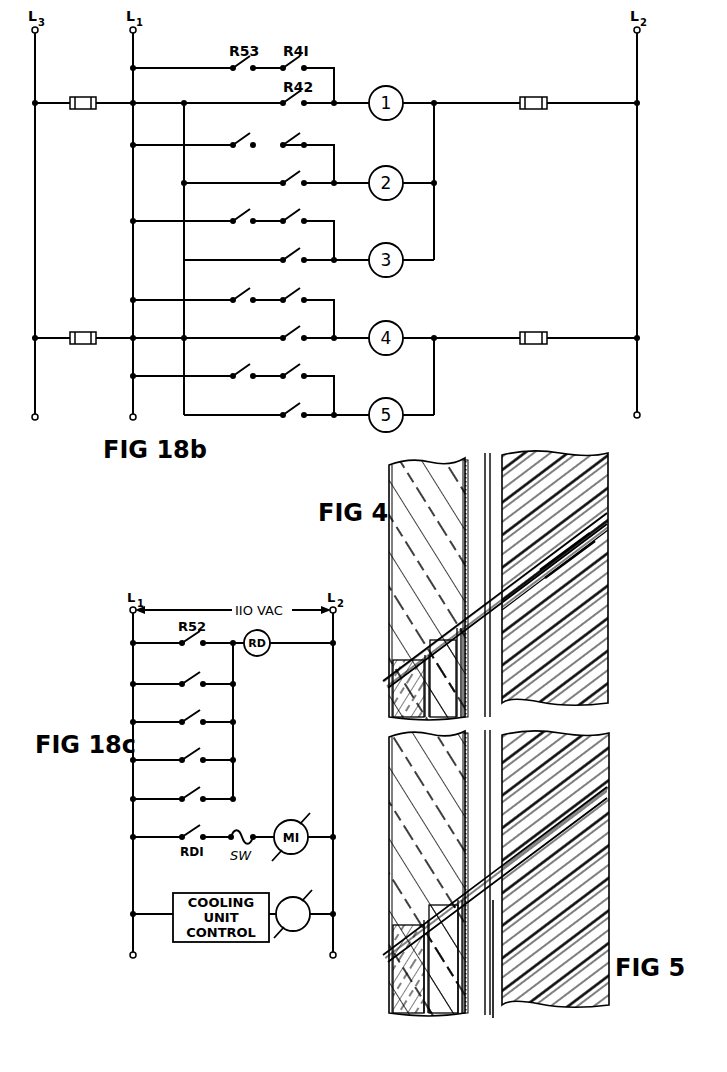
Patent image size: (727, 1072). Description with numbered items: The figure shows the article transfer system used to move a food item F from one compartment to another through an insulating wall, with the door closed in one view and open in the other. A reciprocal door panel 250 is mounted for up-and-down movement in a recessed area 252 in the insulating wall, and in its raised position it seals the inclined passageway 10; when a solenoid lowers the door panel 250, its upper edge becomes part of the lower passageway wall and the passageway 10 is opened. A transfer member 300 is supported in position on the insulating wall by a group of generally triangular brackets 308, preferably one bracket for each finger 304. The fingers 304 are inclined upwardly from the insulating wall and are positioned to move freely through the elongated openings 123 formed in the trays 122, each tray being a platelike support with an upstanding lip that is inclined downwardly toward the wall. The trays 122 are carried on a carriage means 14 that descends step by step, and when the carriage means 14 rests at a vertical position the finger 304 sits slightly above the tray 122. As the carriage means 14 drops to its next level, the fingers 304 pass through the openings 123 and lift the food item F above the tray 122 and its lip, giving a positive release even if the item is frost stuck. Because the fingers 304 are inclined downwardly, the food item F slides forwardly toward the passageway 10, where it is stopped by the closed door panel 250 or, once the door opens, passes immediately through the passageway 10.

In FIG. 4, the passageway 10 is at (400, 672).
In FIG. 5, the passageway 10 is at (395, 940).
In FIG. 4, the carriage means 14 is at (611, 645).
In FIG. 4, the tray 122 is at (600, 562).
In FIG. 5, the tray 122 is at (477, 722).
In FIG. 4, the elongated openings 123 is at (566, 590).
In FIG. 5, the door panel 250 is at (440, 975).
In FIG. 4, the recessed area 252 is at (447, 648).
In FIG. 4, the transfer member 300 is at (527, 599).
In FIG. 5, the transfer member 300 is at (535, 887).
In FIG. 4, the fingers 304 is at (556, 545).
In FIG. 4, the brackets 308 is at (500, 638).
In FIG. 5, the brackets 308 is at (498, 972).
In FIG. 4, the food item F is at (511, 572).
In FIG. 5, the food item F is at (452, 893).